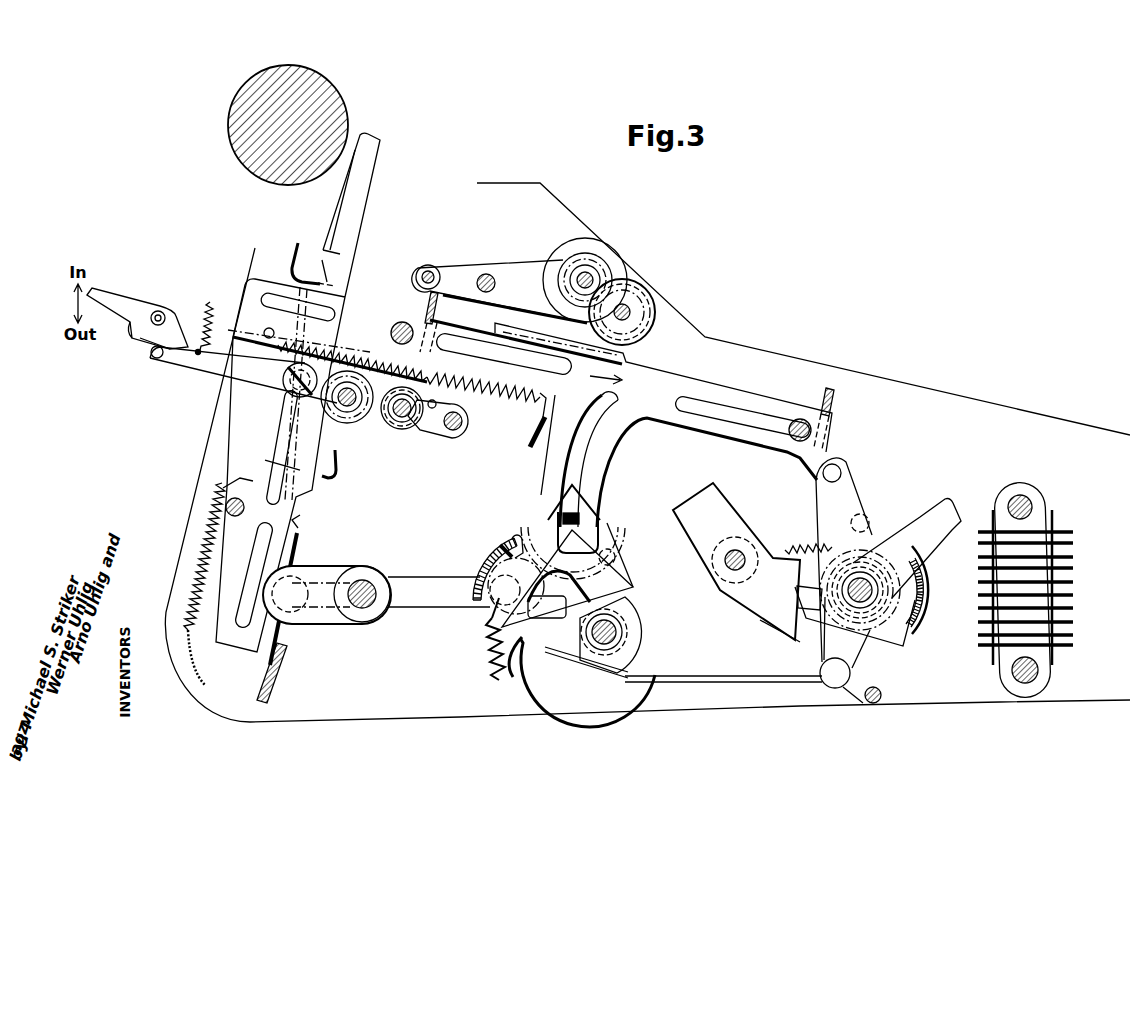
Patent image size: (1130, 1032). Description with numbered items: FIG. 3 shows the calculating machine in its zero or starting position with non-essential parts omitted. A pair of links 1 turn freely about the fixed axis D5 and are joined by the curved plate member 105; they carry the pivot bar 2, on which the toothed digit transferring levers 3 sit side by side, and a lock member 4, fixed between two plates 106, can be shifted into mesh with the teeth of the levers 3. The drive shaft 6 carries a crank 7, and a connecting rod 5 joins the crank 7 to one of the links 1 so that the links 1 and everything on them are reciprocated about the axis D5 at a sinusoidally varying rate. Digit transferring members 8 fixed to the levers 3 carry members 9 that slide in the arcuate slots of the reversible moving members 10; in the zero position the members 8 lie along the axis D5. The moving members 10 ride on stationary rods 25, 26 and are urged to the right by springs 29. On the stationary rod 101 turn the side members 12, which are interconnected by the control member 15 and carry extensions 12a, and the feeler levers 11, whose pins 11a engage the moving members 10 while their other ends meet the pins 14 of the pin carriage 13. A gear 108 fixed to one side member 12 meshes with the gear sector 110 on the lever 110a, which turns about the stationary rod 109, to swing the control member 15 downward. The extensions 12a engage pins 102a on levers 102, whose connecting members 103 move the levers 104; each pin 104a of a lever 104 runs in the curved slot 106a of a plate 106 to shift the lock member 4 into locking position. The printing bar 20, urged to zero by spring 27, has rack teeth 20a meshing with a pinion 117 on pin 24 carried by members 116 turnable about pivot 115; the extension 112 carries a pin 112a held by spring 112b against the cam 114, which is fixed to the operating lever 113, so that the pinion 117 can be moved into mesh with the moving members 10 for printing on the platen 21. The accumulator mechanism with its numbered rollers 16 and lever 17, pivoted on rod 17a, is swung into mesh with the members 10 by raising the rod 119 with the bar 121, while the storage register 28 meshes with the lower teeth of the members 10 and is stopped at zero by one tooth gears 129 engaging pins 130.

The links 1 is at (633, 652).
The pivot bar 2 is at (601, 650).
The digit transferring levers 3 is at (512, 655).
The lock member 4 is at (478, 568).
The connecting rod 5 is at (437, 612).
The drive shaft 6 is at (362, 610).
The crank 7 is at (312, 623).
The digit transferring members 8 is at (578, 520).
The members 9 is at (592, 540).
The reversible moving members 10 is at (653, 390).
The feeler levers 11 is at (851, 495).
The pin 11a is at (836, 466).
The side members 12 is at (922, 601).
The extensions 12a is at (805, 590).
The pin carriage 13 is at (1003, 492).
The pins 14 is at (1060, 530).
The control member 15 is at (904, 632).
The numbered rollers 16 is at (583, 248).
The lever 17 is at (521, 272).
The rod 17a is at (486, 274).
The printing bar 20 is at (368, 170).
The rack teeth 20a is at (313, 492).
The platen 21 is at (335, 112).
The pin 24 is at (353, 414).
The stationary rod 25 is at (798, 420).
The stationary rod 26 is at (397, 324).
The spring 27 is at (200, 548).
The storage register 28 is at (405, 430).
The springs 29 is at (492, 401).
The stationary rod 101 is at (845, 600).
The levers 102 is at (851, 660).
The pins 102a is at (866, 522).
The connecting members 103 is at (710, 680).
The levers 104 is at (552, 610).
The pin 104a is at (614, 550).
The member 105 is at (625, 675).
The plates 106 is at (508, 539).
The curved slot 106a is at (518, 535).
The gear 108 is at (896, 606).
The stationary rod 109 is at (745, 551).
The gear sector 110 is at (790, 632).
The lever 110a is at (702, 546).
The extension 112 is at (207, 367).
The pin 112a is at (156, 359).
The spring 112b is at (212, 319).
The operating lever 113 is at (116, 305).
The cam 114 is at (136, 344).
The stationary pivot 115 is at (293, 385).
The members 116 is at (299, 393).
The pinion 117 is at (360, 410).
The rod 119 is at (416, 322).
The bar 121 is at (427, 265).
The one tooth gears 129 is at (445, 440).
The pins 130 is at (433, 400).
The axis D5 is at (560, 520).